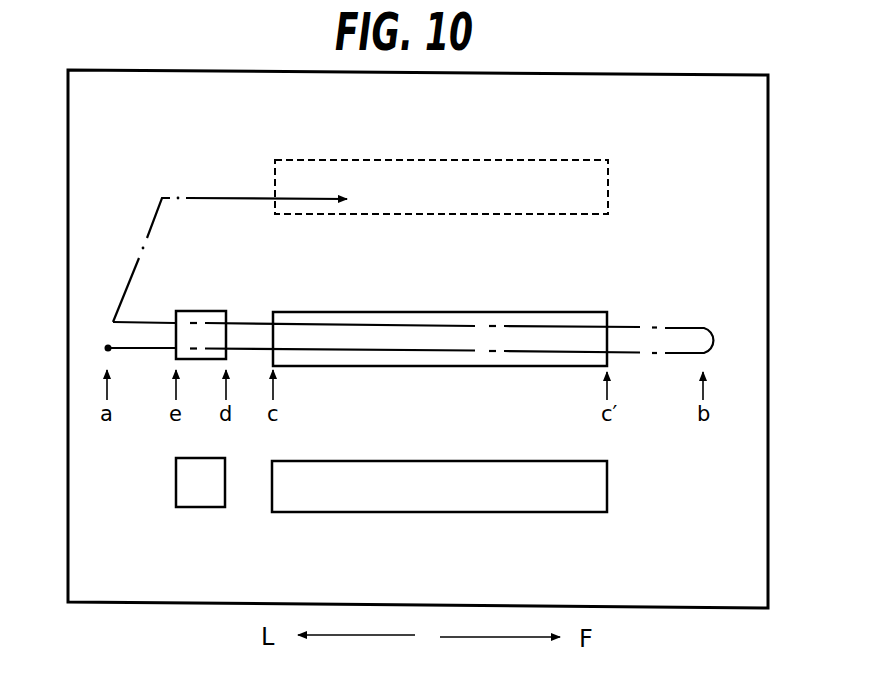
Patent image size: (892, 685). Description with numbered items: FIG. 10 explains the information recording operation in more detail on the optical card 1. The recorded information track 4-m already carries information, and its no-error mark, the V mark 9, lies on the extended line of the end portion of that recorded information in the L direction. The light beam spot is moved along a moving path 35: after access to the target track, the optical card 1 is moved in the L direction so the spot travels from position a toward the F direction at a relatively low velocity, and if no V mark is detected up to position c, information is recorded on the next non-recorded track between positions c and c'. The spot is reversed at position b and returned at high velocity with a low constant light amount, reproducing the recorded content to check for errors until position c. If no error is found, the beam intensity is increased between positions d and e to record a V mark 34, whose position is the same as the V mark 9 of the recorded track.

The optical card 1 is at (769, 276).
The information track 4-m is at (454, 460).
The no-error mark (V mark) 9 is at (188, 508).
The V mark 34 is at (224, 310).
The moving path 35 is at (693, 328).